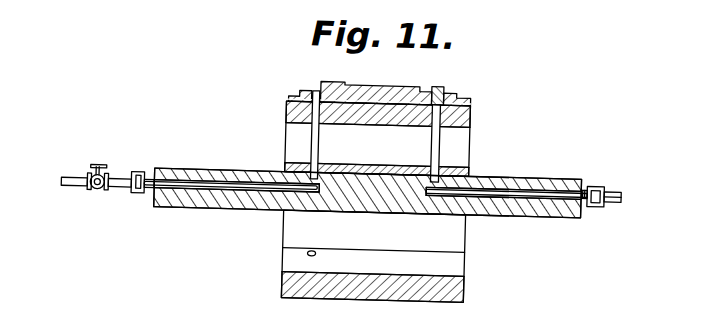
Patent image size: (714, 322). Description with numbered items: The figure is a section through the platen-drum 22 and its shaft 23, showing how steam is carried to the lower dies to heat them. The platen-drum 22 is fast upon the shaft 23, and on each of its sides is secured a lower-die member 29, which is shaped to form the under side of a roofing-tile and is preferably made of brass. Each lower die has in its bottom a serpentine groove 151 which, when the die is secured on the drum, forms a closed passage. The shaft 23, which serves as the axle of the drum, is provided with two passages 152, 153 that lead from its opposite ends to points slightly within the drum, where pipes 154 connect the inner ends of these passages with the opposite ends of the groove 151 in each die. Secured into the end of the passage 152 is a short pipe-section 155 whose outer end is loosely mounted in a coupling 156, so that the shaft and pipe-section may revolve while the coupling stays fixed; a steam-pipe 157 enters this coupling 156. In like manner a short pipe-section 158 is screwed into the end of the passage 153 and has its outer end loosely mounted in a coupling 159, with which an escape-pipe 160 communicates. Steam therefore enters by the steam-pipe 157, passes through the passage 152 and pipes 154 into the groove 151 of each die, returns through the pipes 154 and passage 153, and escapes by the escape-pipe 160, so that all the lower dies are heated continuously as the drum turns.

The platen-drum 22 is at (283, 252).
The shaft 23 is at (518, 164).
The lower-die member 29 is at (398, 98).
The serpentine groove 151 is at (358, 100).
The passage 152 is at (242, 192).
The passage 153 is at (550, 194).
The pipes 154 is at (310, 149).
The short pipe-section 155 is at (150, 181).
The coupling 156 is at (138, 178).
The steam-pipe 157 is at (125, 194).
The short pipe-section 158 is at (587, 182).
The coupling 159 is at (607, 181).
The escape-pipe 160 is at (618, 199).